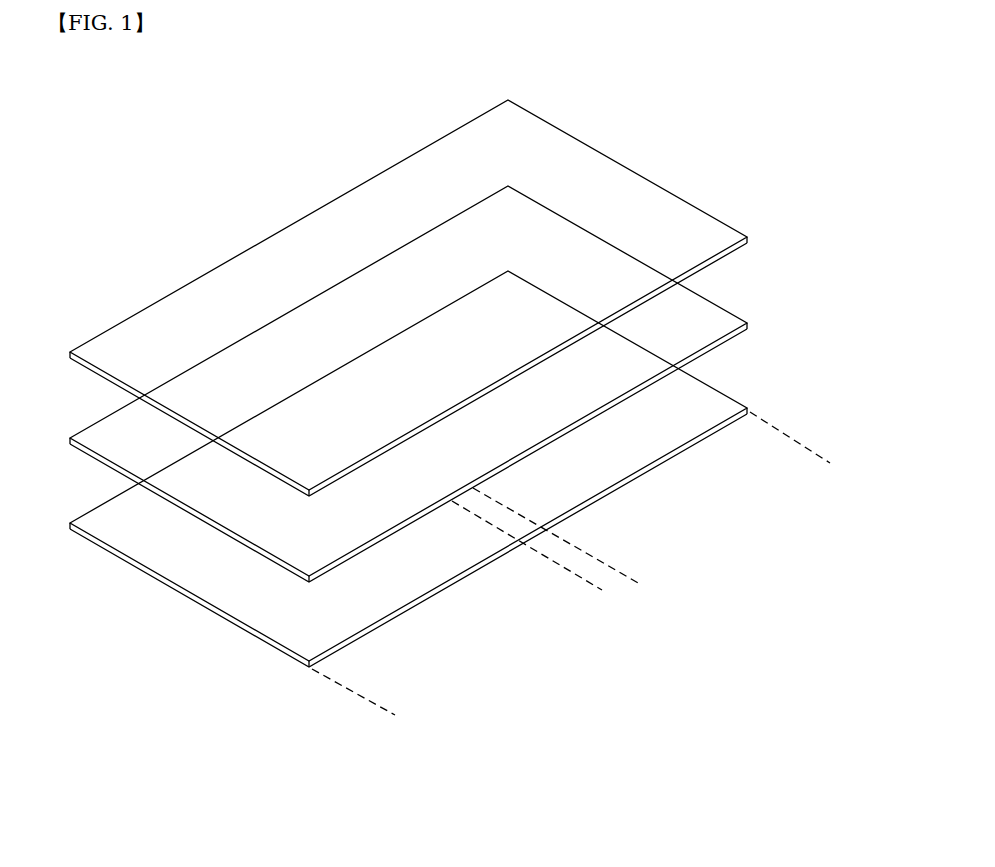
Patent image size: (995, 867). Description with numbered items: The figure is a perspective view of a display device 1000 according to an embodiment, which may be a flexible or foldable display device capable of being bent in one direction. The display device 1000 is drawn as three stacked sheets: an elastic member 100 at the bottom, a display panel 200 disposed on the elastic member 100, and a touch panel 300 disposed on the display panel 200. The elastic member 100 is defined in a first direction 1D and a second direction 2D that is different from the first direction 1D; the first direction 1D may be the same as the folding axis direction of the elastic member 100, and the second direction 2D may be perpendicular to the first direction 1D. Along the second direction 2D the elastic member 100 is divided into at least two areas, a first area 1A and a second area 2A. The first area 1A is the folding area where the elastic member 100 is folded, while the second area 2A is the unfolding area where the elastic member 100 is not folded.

The display device 1000 is at (43, 196).
The elastic member 100 is at (101, 516).
The display panel 200 is at (101, 431).
The touch panel 300 is at (101, 346).
The first direction 1D is at (272, 687).
The second direction 2D is at (885, 492).
The first area 1A is at (548, 588).
The second area 2A is at (602, 593).